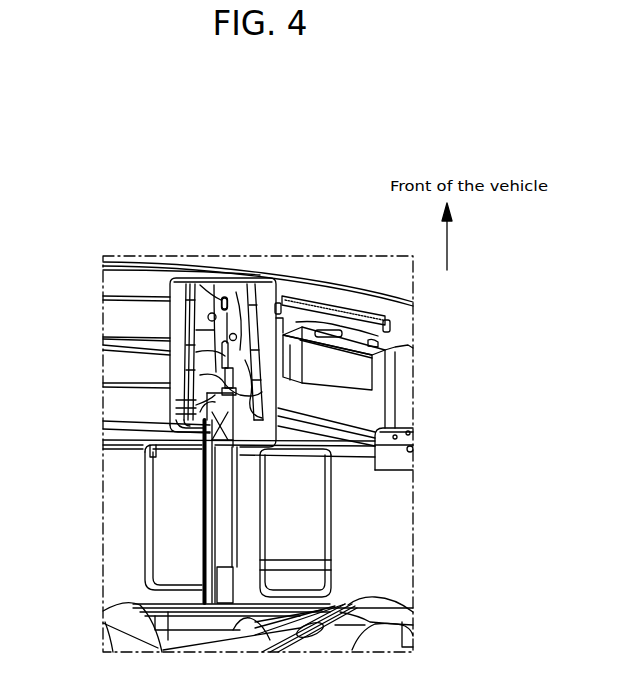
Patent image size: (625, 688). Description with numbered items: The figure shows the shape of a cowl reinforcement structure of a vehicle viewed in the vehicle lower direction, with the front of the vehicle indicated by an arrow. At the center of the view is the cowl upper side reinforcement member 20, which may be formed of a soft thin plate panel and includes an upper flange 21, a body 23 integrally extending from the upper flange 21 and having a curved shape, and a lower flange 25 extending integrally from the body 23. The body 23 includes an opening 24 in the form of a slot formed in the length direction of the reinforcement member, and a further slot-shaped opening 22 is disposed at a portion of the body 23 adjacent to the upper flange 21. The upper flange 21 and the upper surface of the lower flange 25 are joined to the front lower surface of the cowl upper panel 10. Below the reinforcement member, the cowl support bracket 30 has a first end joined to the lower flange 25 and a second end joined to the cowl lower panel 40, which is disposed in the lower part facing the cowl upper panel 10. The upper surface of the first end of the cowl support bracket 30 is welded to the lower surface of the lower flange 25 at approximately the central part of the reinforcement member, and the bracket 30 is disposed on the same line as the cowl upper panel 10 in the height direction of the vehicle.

The cowl upper panel 10 is at (337, 298).
The cowl upper side reinforcement member 20 is at (53, 305).
The upper flange 21 is at (185, 306).
The slot-shaped opening 22 is at (222, 297).
The body 23 is at (215, 333).
The opening 24 is at (228, 313).
The lower flange 25 is at (183, 412).
The cowl support bracket 30 is at (210, 509).
The cowl lower panel 40 is at (176, 573).